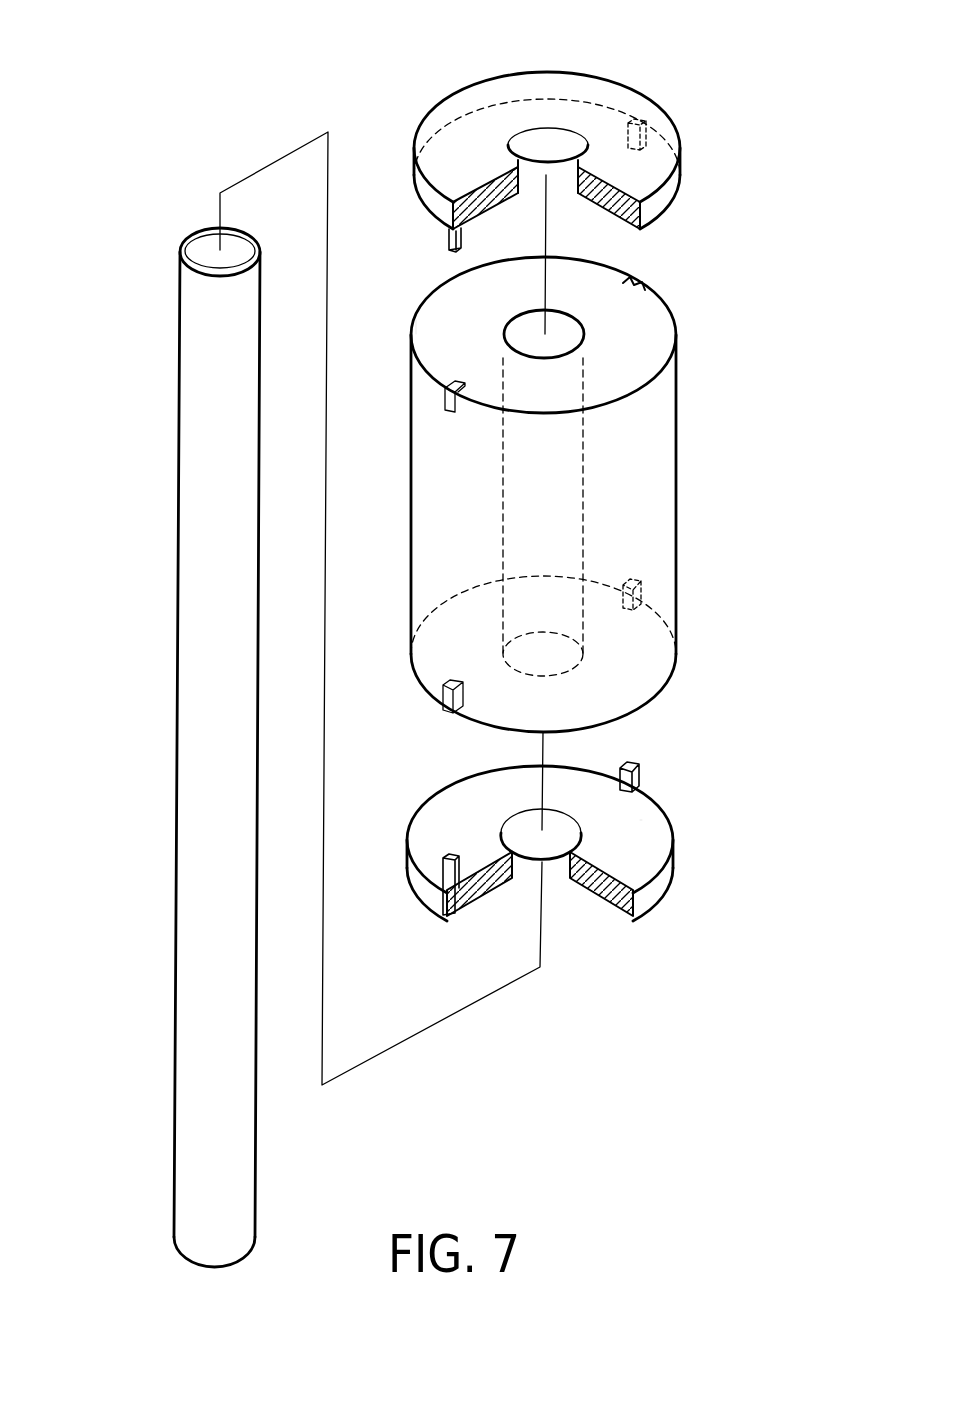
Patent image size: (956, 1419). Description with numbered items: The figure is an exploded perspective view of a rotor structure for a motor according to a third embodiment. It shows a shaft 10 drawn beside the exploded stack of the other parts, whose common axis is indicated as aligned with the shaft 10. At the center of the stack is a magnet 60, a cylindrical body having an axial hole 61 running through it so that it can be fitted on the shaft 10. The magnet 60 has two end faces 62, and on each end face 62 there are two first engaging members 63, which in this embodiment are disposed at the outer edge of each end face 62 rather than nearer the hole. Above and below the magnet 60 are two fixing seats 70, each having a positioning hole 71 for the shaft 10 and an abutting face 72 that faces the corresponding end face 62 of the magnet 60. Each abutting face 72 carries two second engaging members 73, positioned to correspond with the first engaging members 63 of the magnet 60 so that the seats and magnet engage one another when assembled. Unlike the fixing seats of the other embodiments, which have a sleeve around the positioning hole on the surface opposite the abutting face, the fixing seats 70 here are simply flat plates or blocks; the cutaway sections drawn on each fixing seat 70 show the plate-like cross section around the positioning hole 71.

The shaft 10 is at (200, 555).
The magnet 60 is at (648, 510).
The axial hole 61 is at (565, 335).
The end face 62 is at (643, 355).
The first engaging member 63 is at (455, 393).
The fixing seat 70 is at (657, 153).
The positioning hole 71 is at (548, 138).
The abutting face 72 is at (613, 230).
The second engaging member 73 is at (452, 236).